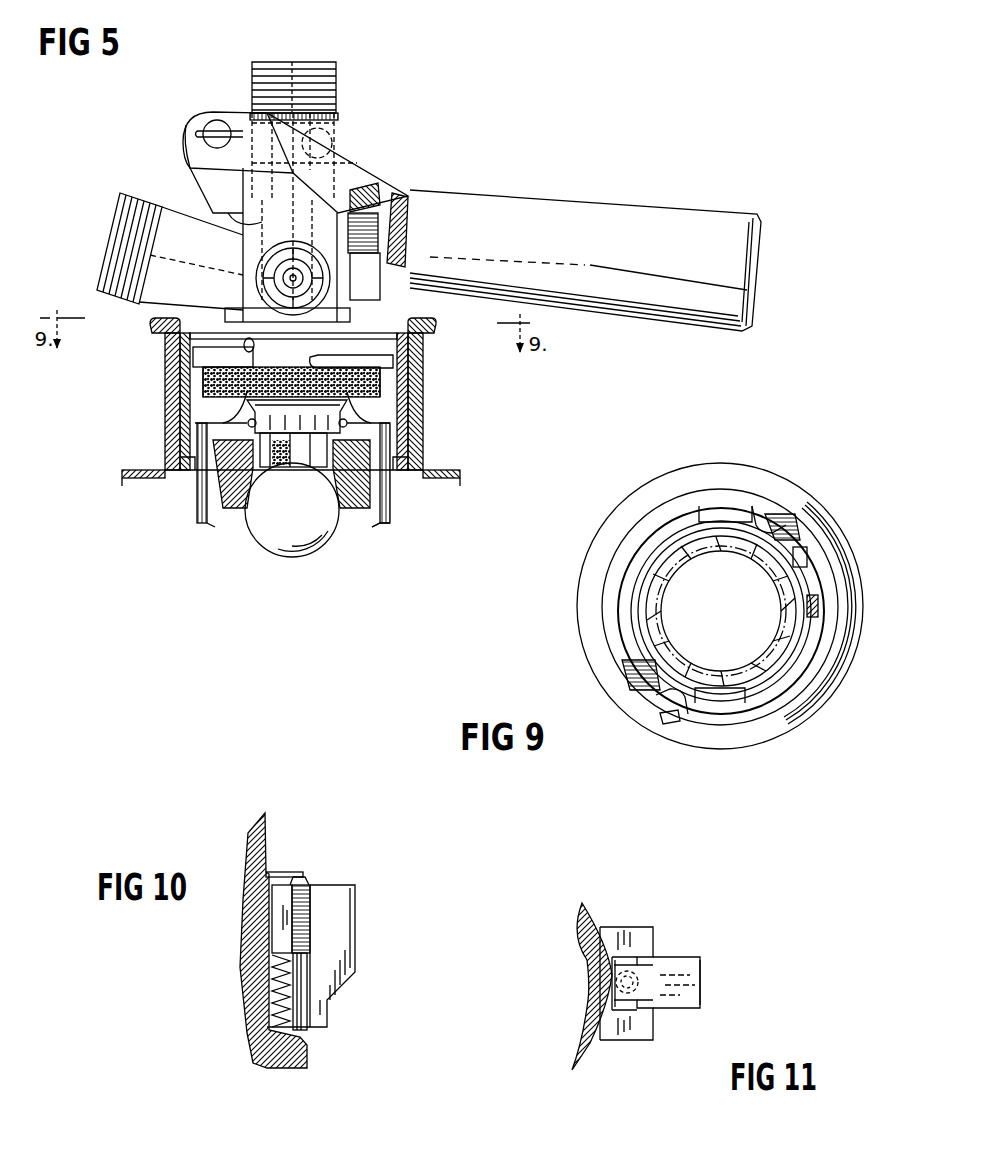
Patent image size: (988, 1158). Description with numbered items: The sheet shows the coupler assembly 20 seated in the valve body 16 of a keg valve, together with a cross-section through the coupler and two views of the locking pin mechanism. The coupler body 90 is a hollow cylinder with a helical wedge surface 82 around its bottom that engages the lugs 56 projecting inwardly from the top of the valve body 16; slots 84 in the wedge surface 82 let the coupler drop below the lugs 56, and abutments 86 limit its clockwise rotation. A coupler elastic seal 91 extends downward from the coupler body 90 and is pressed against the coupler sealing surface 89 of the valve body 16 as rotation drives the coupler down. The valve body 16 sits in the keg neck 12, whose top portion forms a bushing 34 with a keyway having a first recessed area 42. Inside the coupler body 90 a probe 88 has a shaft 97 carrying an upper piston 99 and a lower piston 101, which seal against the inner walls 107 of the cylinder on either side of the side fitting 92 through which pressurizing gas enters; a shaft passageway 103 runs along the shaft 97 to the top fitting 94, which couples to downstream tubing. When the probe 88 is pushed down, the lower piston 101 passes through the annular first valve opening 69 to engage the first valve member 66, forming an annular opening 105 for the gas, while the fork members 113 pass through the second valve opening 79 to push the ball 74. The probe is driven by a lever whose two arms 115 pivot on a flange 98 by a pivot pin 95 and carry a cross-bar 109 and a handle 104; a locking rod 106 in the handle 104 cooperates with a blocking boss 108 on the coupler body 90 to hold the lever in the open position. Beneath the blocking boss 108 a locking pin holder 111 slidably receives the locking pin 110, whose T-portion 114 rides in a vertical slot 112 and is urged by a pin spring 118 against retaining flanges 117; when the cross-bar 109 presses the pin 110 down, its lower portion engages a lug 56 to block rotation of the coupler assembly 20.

In FIG. 5, the neck 12 is at (421, 456).
In FIG. 5, the valve body 16 is at (394, 397).
In FIG. 5, the coupler assembly 20 is at (419, 112).
In FIG. 9, the bushing 34 is at (760, 485).
In FIG. 9, the first recessed area 42 is at (673, 721).
In FIG. 9, the lugs 56 is at (787, 535).
In FIG. 5, the first valve member 66 is at (336, 525).
In FIG. 5, the first valve opening 69 is at (250, 402).
In FIG. 5, the ball 74 is at (282, 516).
In FIG. 5, the second valve opening 79 is at (290, 458).
In FIG. 5, the wedge surface 82 is at (394, 359).
In FIG. 9, the wedge surface 82 is at (643, 530).
In FIG. 5, the slots 84 is at (287, 357).
In FIG. 9, the slots 84 is at (718, 506).
In FIG. 9, the abutments 86 is at (754, 514).
In FIG. 5, the probe 88 is at (346, 100).
In FIG. 5, the coupler sealing surface 89 is at (200, 388).
In FIG. 5, the coupler body 90 is at (283, 230).
In FIG. 9, the coupler body 90 is at (650, 610).
In FIG. 5, the coupler elastic seal 91 is at (203, 378).
In FIG. 5, the side fitting 92 is at (179, 263).
In FIG. 5, the top fitting 94 is at (342, 77).
In FIG. 5, the pivot pin 95 is at (208, 124).
In FIG. 5, the shaft 97 is at (237, 220).
In FIG. 5, the flange 98 is at (190, 143).
In FIG. 5, the upper piston 99 is at (183, 167).
In FIG. 5, the lower piston 101 is at (348, 423).
In FIG. 5, the shaft passageway 103 is at (292, 60).
In FIG. 5, the handle 104 is at (688, 222).
In FIG. 5, the annular opening 105 is at (243, 423).
In FIG. 5, the locking rod 106 is at (403, 198).
In FIG. 5, the inner walls 107 is at (195, 353).
In FIG. 5, the blocking boss 108 is at (372, 187).
In FIG. 5, the cross-bar 109 is at (407, 240).
In FIG. 10, the locking pin 110 is at (336, 910).
In FIG. 11, the locking pin 110 is at (703, 977).
In FIG. 5, the locking pin holder 111 is at (262, 453).
In FIG. 11, the locking pin holder 111 is at (637, 927).
In FIG. 11, the vertical slot 112 is at (627, 1013).
In FIG. 5, the fork members 113 is at (223, 472).
In FIG. 11, the fork members 113 is at (667, 967).
In FIG. 10, the T-portion 114 is at (283, 907).
In FIG. 11, the T-portion 114 is at (622, 993).
In FIG. 5, the arms 115 is at (232, 113).
In FIG. 10, the retaining flanges 117 is at (303, 872).
In FIG. 10, the pin spring 118 is at (260, 998).